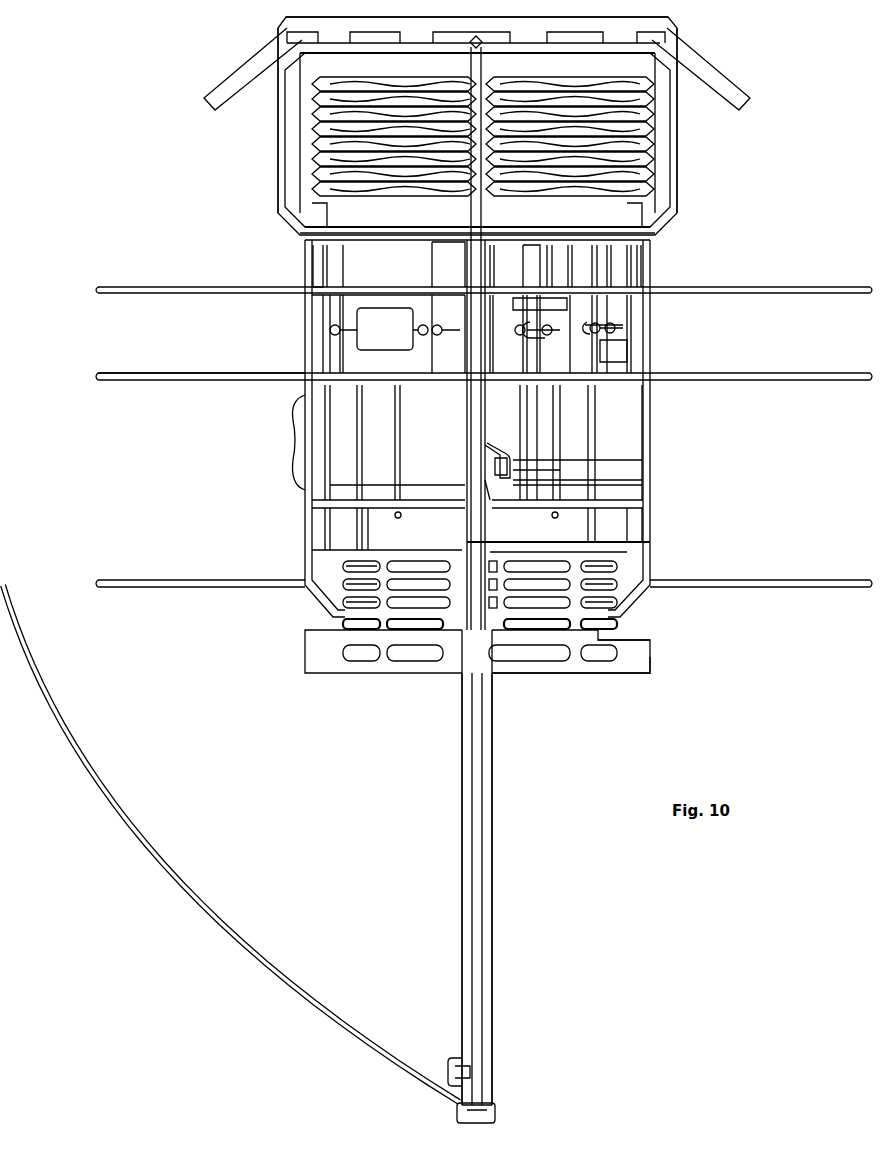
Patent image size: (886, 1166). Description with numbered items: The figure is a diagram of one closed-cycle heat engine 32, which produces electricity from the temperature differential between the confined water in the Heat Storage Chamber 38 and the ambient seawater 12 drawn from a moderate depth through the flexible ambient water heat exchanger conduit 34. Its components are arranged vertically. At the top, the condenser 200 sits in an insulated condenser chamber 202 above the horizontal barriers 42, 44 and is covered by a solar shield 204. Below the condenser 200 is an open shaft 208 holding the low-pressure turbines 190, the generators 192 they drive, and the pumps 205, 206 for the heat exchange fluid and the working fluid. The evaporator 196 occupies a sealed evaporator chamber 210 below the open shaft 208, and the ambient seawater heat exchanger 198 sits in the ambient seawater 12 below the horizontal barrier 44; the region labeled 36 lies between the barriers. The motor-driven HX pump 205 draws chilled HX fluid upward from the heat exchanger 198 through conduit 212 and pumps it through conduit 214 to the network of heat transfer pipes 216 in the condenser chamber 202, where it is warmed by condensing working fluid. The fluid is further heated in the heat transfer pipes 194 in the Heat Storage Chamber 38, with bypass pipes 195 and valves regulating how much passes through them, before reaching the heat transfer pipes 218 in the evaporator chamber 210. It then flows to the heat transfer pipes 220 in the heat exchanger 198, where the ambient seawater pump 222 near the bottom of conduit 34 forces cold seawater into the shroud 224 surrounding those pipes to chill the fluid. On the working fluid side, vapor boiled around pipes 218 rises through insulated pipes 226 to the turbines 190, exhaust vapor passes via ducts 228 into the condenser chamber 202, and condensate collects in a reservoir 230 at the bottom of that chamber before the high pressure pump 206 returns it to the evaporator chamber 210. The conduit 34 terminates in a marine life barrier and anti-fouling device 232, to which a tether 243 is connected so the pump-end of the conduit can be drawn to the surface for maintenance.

The ambient seawater 12 is at (522, 889).
The closed-cycle heat engine 32 is at (160, 120).
The ambient water heat exchanger conduit 34 is at (492, 899).
The upper rail 36 is at (484, 315).
The Heat Storage Chamber 38 is at (201, 429).
The horizontal barrier 42 is at (210, 383).
The horizontal barrier 44 is at (210, 590).
The low-pressure turbine 190 is at (592, 326).
The generator 192 is at (457, 338).
The heat transfer pipes 194 is at (303, 463).
The bypass pipes 195 is at (330, 440).
The evaporator 196 is at (650, 567).
The ambient seawater heat exchanger 198 is at (300, 696).
The condenser 200 is at (700, 201).
The insulated condenser chamber 202 is at (640, 68).
The solar shield 204 is at (275, 30).
The HX pump 205 is at (507, 471).
The high pressure working fluid pump 206 is at (500, 463).
The open shaft 208 is at (610, 413).
The sealed evaporator chamber 210 is at (477, 530).
The conduit 212 is at (650, 543).
The conduit 214 is at (485, 416).
The heat transfer pipes 216 is at (593, 150).
The heat transfer pipes 218 is at (353, 573).
The heat transfer pipes 220 is at (652, 640).
The ambient seawater pump 222 is at (460, 1058).
The shroud 224 is at (652, 657).
The insulated pipes 226 is at (600, 362).
The ducts 228 is at (597, 262).
The reservoir 230 is at (600, 237).
The marine life barrier and anti-fouling device 232 is at (496, 1108).
The tether 243 is at (236, 935).